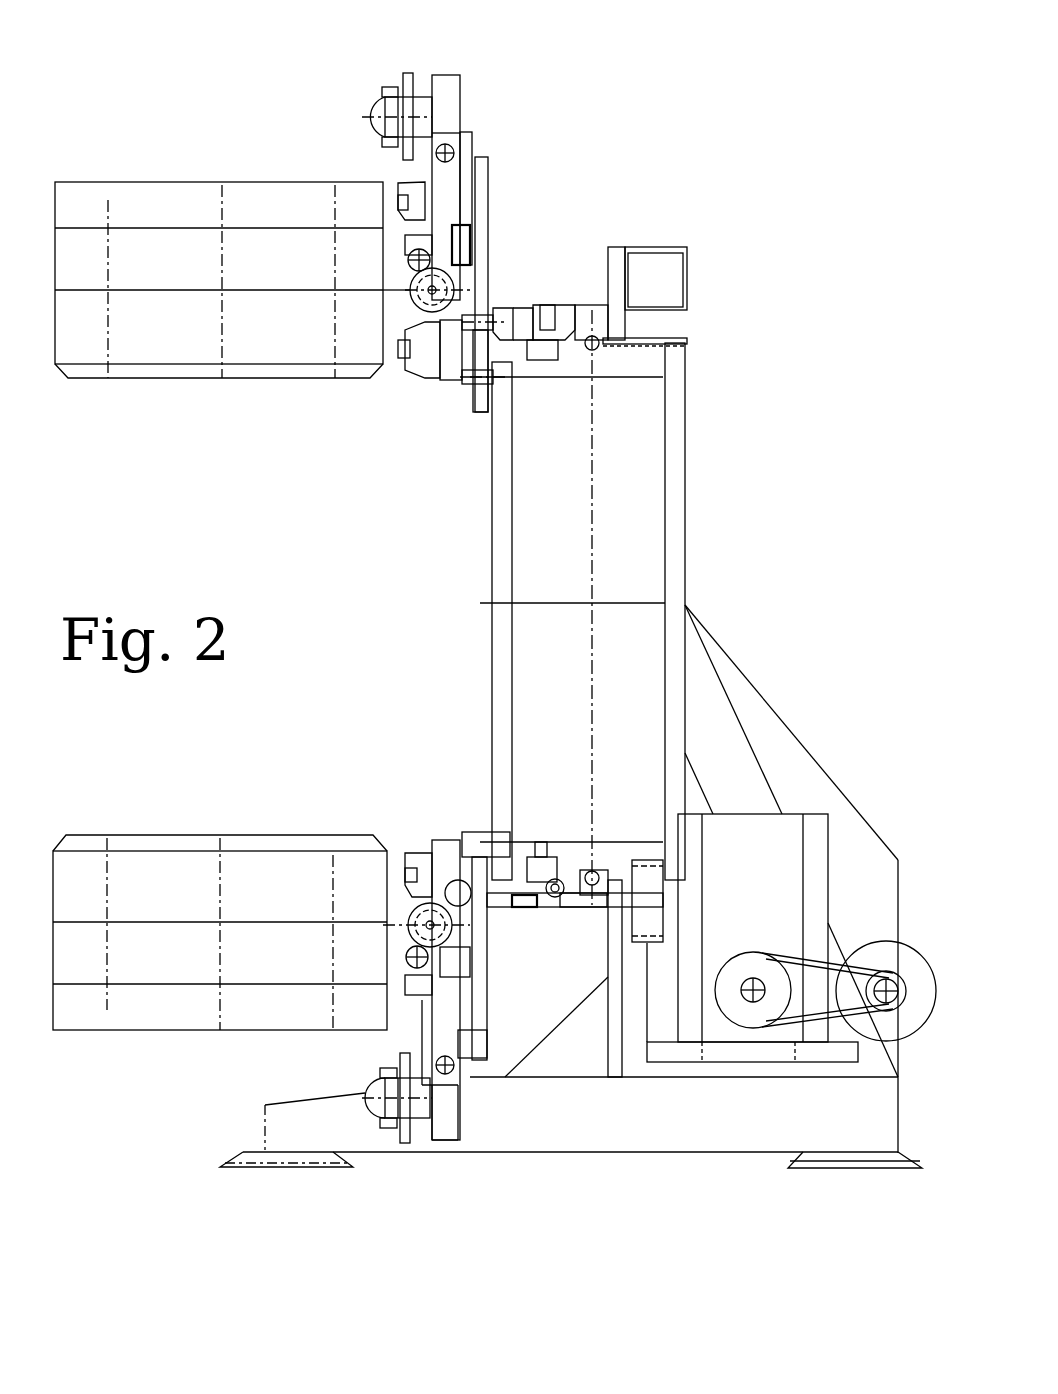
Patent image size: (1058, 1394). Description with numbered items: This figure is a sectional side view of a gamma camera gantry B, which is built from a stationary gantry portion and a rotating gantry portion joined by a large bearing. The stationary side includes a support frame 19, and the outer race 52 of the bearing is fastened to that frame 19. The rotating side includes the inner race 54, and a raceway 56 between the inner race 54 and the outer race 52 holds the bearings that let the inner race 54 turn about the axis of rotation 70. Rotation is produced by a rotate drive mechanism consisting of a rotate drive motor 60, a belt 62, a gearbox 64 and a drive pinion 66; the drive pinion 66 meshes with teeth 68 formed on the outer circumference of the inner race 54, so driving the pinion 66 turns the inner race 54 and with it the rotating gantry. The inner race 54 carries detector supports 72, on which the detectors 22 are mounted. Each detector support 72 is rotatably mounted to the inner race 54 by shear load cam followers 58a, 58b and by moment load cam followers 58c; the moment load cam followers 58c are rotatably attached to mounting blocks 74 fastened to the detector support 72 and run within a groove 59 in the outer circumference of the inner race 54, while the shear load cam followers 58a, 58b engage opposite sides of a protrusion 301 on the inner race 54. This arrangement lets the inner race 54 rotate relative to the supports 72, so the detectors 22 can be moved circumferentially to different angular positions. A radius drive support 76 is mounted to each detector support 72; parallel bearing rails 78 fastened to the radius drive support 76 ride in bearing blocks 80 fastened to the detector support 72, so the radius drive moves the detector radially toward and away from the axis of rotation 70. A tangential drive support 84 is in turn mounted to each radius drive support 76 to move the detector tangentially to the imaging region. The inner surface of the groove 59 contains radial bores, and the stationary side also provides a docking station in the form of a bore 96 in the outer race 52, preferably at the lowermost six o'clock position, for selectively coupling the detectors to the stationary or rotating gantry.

The support frame 19 is at (614, 1120).
The detectors 22 is at (278, 338).
The outer race 52 is at (600, 320).
The inner race 54 is at (628, 363).
The raceway 56 is at (647, 340).
The shear load cam follower 58a is at (477, 328).
The shear load cam follower 58b is at (475, 384).
The moment load cam follower 58c is at (543, 360).
The groove 59 is at (588, 352).
The rotate drive motor 60 is at (905, 960).
The belt 62 is at (828, 1050).
The gearbox 64 is at (817, 840).
The drive pinion 66 is at (647, 943).
The teeth 68 is at (648, 860).
The axis of rotation 70 is at (485, 600).
The detector support 72 is at (485, 170).
The mounting block 74 is at (562, 318).
The radius drive support 76 is at (440, 82).
The bearing rails 78 is at (477, 233).
The bearing blocks 80 is at (457, 100).
The tangential drive support 84 is at (398, 183).
The bore 96 is at (585, 912).
The protrusion 301 is at (503, 350).
The gantry B is at (553, 853).